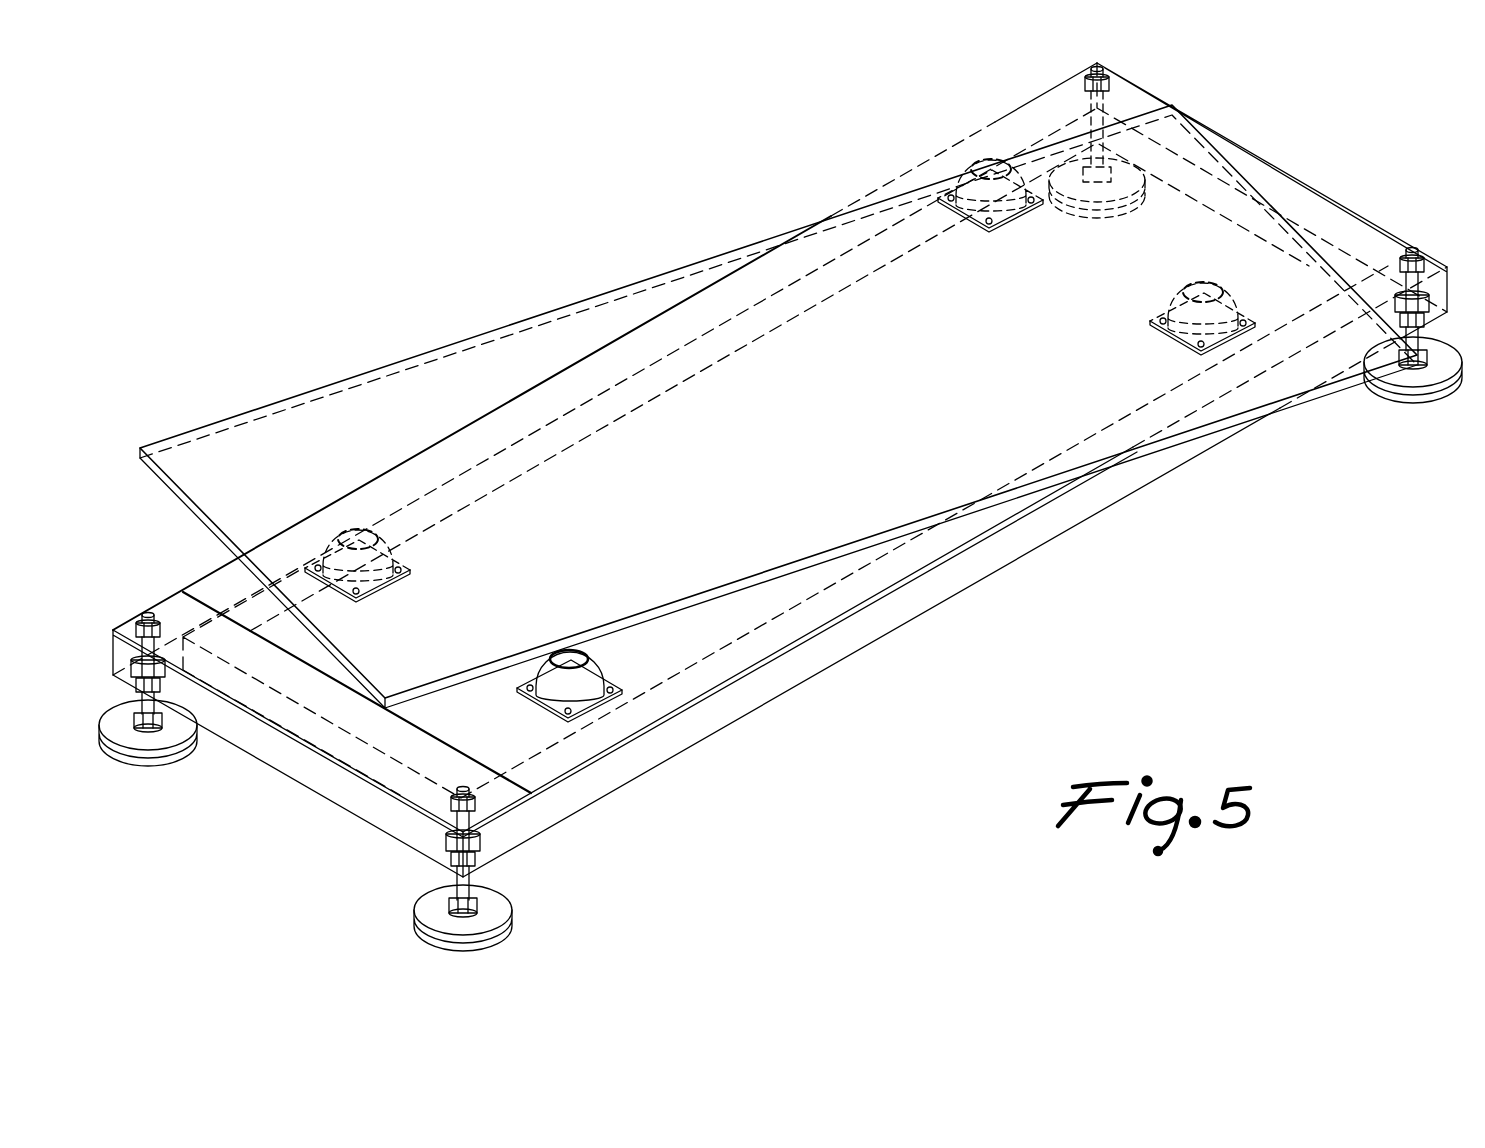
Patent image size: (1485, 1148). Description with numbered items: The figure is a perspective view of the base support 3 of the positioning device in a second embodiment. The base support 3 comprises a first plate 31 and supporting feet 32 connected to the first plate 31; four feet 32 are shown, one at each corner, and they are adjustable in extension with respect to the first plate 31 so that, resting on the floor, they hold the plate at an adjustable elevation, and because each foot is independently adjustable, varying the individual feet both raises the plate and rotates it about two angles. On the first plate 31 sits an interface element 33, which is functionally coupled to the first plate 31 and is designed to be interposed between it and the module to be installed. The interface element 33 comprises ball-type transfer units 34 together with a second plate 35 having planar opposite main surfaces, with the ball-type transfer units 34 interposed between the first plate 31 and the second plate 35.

The base support 3 is at (786, 497).
The first plate 31 is at (732, 670).
The supporting feet 32 is at (1140, 165).
The interface element 33 is at (778, 406).
The ball-type transfer units 34 is at (584, 675).
The second plate 35 is at (713, 393).